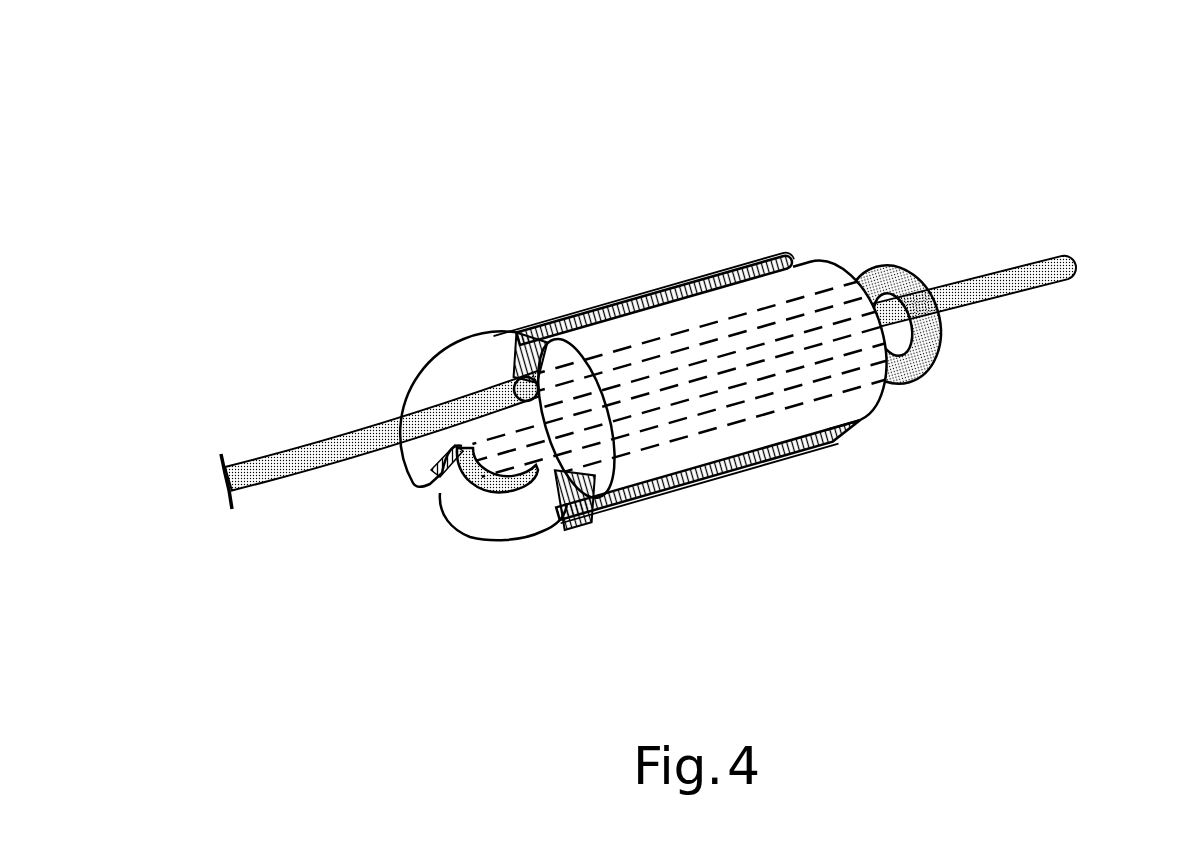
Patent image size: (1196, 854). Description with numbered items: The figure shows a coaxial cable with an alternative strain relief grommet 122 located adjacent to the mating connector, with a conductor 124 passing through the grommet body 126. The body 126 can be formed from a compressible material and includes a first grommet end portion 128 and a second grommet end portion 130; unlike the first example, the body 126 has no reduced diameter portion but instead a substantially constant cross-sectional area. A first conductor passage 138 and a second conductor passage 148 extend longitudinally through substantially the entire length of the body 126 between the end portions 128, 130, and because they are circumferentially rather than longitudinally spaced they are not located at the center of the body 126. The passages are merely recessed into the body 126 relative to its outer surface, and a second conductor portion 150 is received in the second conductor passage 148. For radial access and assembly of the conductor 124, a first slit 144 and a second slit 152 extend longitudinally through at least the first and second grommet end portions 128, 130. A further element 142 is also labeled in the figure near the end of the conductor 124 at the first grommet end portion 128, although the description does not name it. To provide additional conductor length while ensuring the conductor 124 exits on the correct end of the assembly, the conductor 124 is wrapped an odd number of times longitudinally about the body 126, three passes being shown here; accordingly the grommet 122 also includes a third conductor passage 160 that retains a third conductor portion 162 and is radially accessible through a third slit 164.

The strain relief grommet 122 is at (870, 178).
The conductor 124 is at (252, 450).
The grommet body 126 is at (412, 380).
The first grommet end portion 128 is at (805, 430).
The second grommet end portion 130 is at (567, 534).
The first conductor passage 138 is at (765, 300).
The wire end 142 is at (519, 383).
The first slit 144 is at (720, 272).
The second conductor passage 148 is at (698, 475).
The second conductor portion 150 is at (855, 400).
The second slit 152 is at (782, 395).
The third conductor passage 160 is at (468, 426).
The third conductor portion 162 is at (452, 454).
The third slit 164 is at (435, 490).